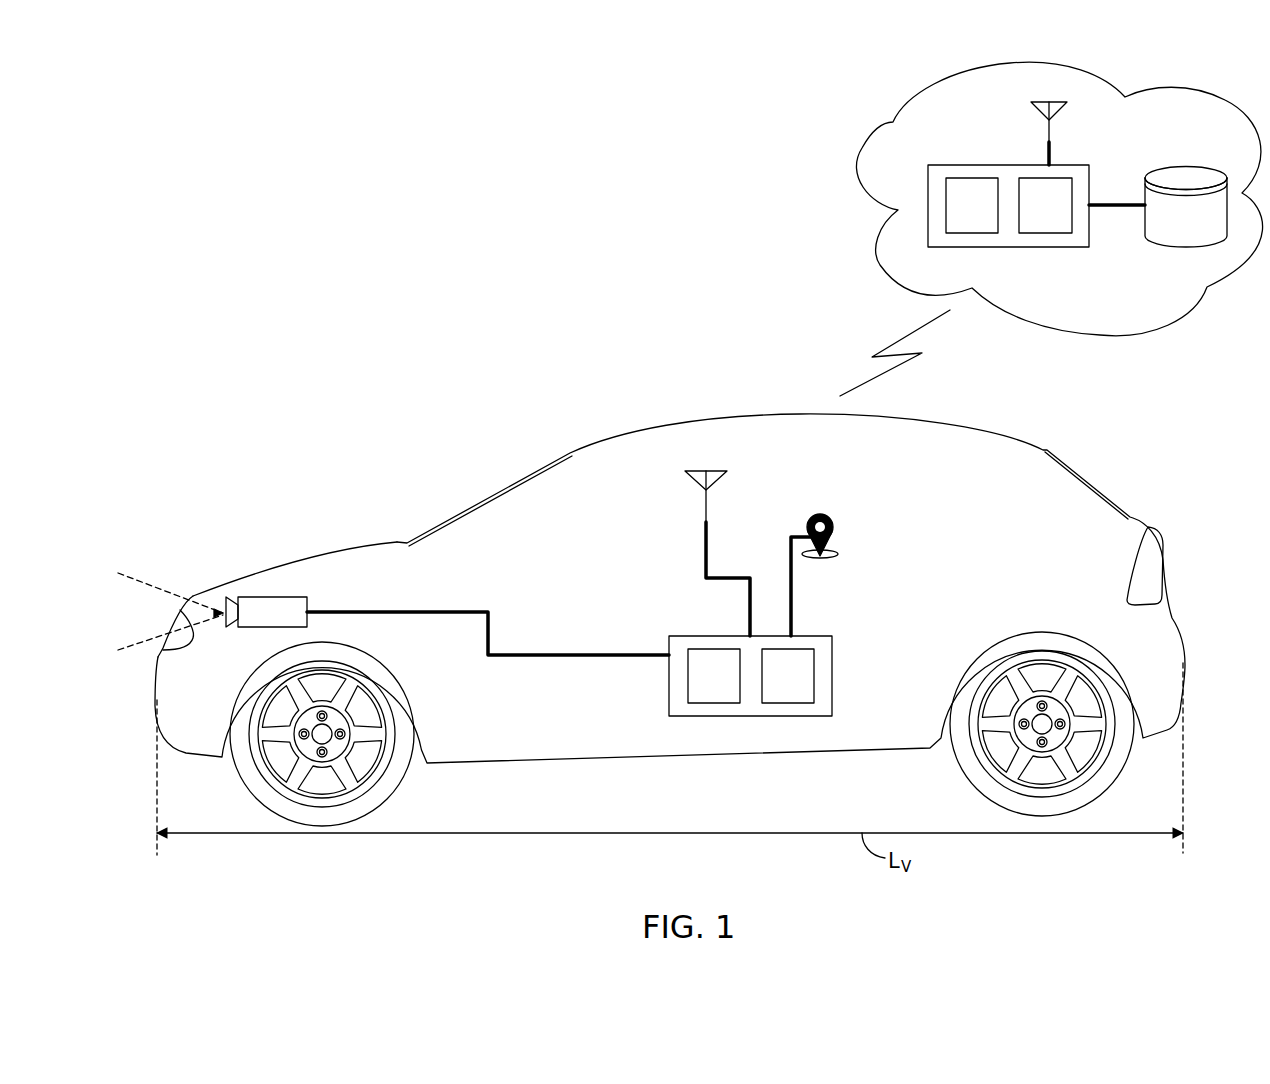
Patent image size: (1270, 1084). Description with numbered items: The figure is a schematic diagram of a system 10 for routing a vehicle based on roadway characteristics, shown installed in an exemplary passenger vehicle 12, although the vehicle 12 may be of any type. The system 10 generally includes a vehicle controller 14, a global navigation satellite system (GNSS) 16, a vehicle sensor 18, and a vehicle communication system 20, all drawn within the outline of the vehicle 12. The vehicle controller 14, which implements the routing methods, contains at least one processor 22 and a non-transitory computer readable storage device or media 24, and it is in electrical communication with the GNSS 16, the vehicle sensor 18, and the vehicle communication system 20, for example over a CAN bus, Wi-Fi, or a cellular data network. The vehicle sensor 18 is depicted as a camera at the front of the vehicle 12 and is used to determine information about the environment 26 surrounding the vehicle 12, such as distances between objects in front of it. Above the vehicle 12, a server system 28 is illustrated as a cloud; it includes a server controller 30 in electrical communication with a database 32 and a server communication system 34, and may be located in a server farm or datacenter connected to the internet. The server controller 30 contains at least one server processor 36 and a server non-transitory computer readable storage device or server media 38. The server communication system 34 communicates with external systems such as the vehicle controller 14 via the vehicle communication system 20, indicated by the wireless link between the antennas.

The system for routing a vehicle based on roadway characteristics 10 is at (1010, 550).
The vehicle 12 is at (337, 553).
The vehicle controller 14 is at (832, 716).
The global navigation satellite system (GNSS) 16 is at (832, 539).
The vehicle sensor 18 is at (393, 614).
The vehicle communication system 20 is at (700, 490).
The processor 22 is at (714, 676).
The non-transitory computer readable storage device or media 24 is at (788, 676).
The environment 26 is at (225, 447).
The server system 28 is at (877, 125).
The server controller 30 is at (1008, 247).
The database 32 is at (1186, 207).
The server communication system 34 is at (1040, 118).
The server processor 36 is at (972, 205).
The server non-transitory computer readable storage device or server media 38 is at (1045, 205).